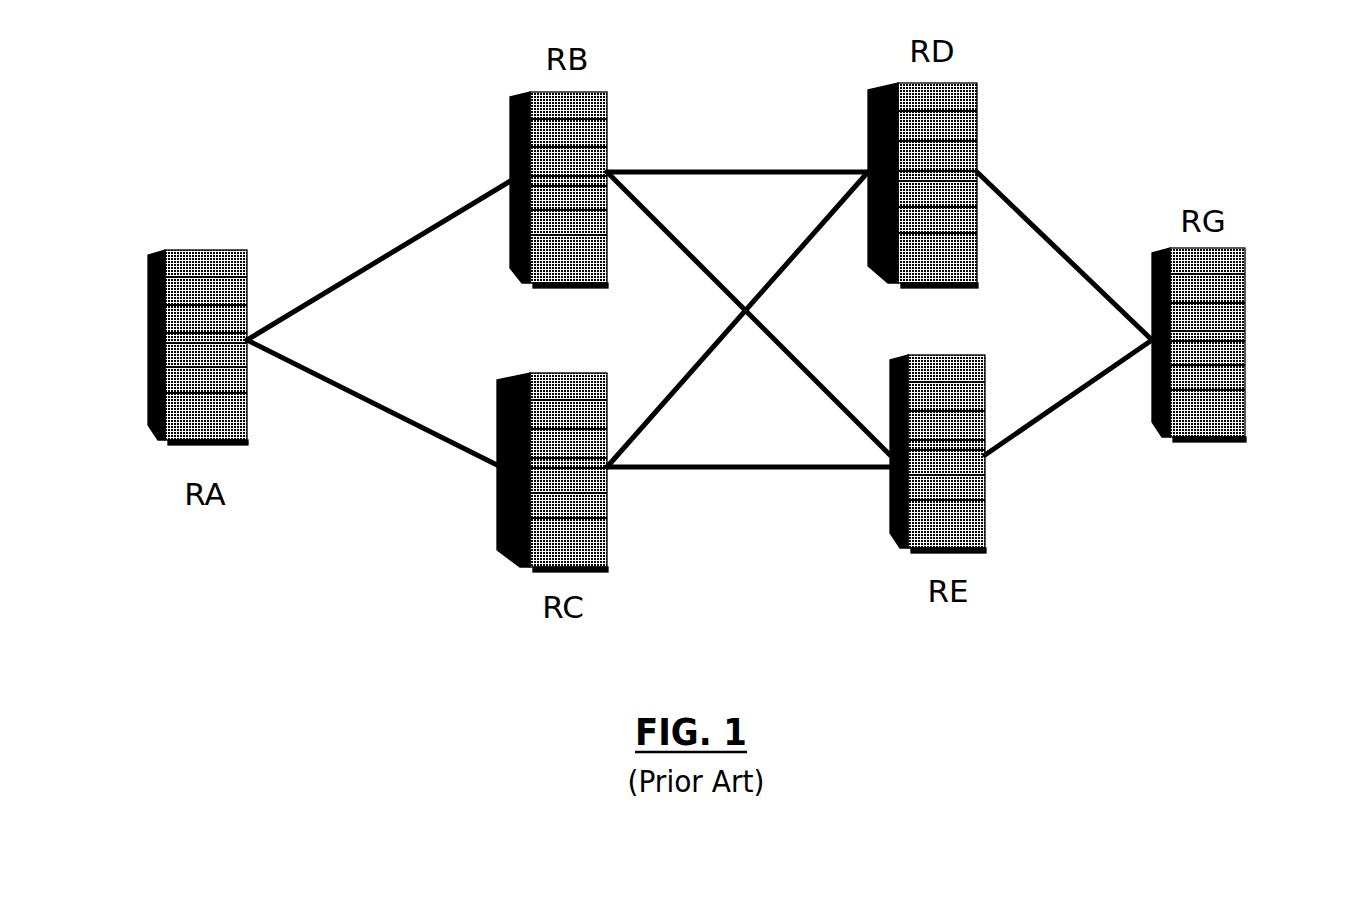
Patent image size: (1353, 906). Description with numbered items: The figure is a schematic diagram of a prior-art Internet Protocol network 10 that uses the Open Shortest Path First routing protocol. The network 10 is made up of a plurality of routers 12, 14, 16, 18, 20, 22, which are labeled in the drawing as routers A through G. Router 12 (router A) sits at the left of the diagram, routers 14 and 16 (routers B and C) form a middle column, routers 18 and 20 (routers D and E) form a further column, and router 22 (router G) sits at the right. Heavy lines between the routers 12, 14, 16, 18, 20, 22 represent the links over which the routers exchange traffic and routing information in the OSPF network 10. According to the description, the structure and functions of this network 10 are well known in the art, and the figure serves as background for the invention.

The Internet Protocol network 10 is at (1138, 120).
The router 12 is at (205, 256).
The router 14 is at (592, 117).
The router 16 is at (595, 548).
The router 18 is at (962, 110).
The router 20 is at (960, 522).
The router 22 is at (1240, 278).